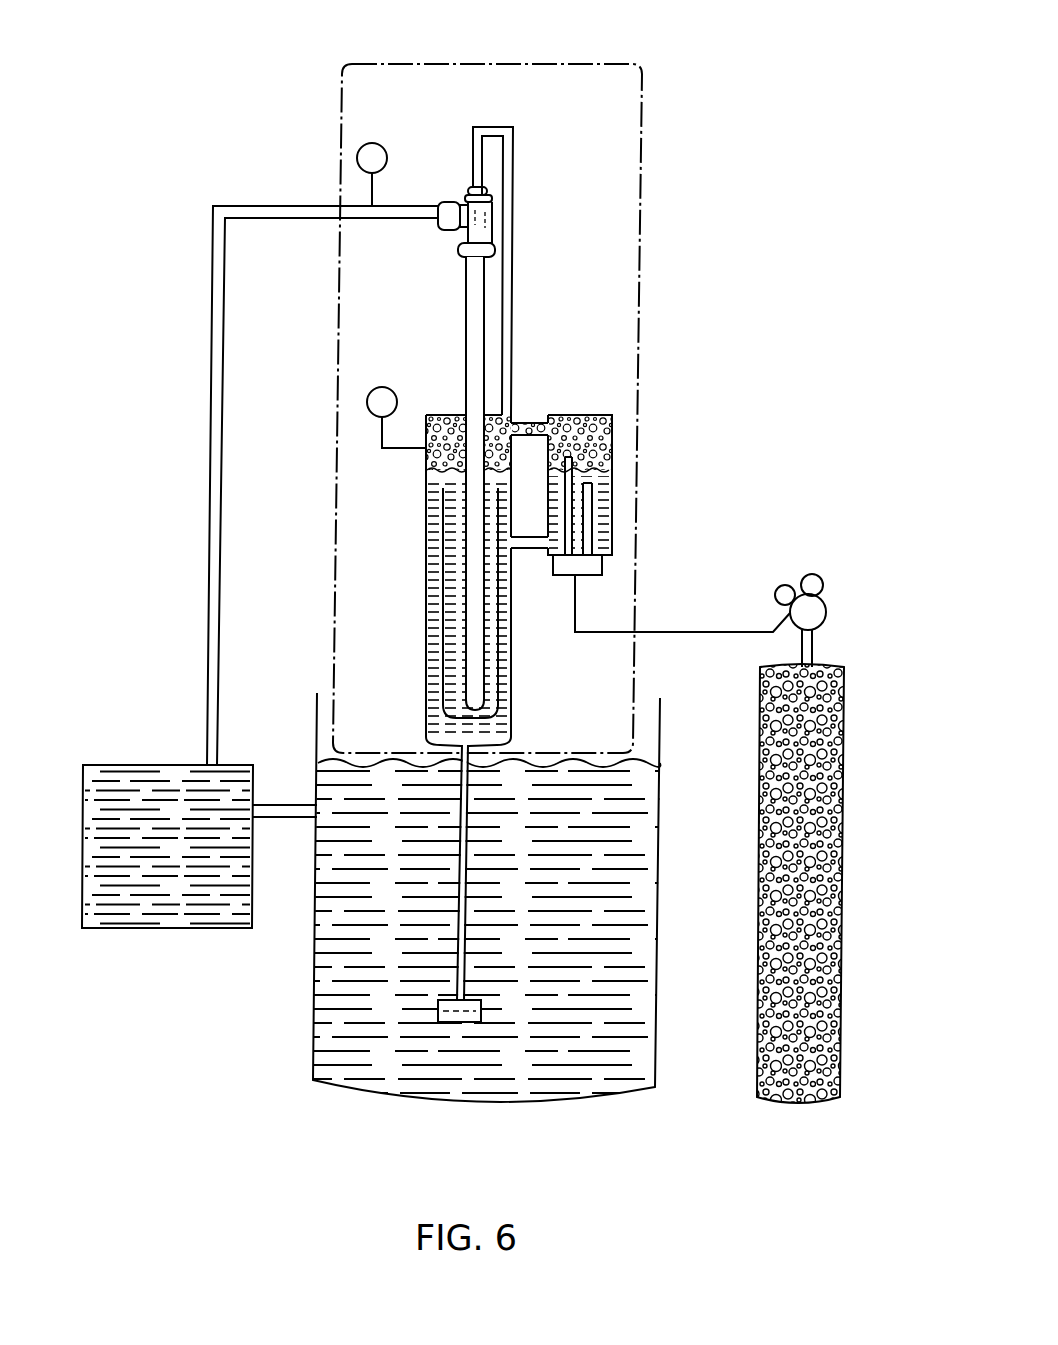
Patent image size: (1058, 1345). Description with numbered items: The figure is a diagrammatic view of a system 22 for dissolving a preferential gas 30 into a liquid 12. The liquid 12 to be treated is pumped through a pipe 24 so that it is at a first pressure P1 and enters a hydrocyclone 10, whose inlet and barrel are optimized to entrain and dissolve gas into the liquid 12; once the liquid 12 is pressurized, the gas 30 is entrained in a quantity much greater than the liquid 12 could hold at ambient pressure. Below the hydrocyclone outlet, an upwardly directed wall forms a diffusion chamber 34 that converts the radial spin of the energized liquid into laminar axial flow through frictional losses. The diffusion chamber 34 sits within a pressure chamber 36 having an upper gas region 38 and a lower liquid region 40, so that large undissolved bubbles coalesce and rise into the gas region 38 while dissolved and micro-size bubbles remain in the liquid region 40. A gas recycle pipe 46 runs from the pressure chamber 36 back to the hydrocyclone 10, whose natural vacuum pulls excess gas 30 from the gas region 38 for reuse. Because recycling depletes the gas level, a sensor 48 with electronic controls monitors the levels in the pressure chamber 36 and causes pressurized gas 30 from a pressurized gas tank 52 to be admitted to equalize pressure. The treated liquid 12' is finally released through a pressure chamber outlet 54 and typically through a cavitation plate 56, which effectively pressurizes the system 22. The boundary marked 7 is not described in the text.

The system 22 is at (340, 107).
The apparatus boundary 7 is at (644, 127).
The first pressure P1 is at (357, 157).
The pipe 24 is at (212, 342).
The hydrocyclone 10 is at (450, 325).
The gas recycle pipe 46 is at (515, 322).
The upper gas region 38 is at (450, 425).
The pressure chamber 36 is at (425, 548).
The lower liquid region 40 is at (437, 625).
The diffusion chamber 34 is at (490, 642).
The sensor 48 is at (596, 565).
The pressurized gas tank 52 is at (843, 720).
The preferential gas 30 is at (827, 845).
The liquid 12 is at (184, 814).
The liquid 12' is at (429, 901).
The pressure chamber outlet 54 is at (463, 945).
The cavitation plate 56 is at (444, 1012).